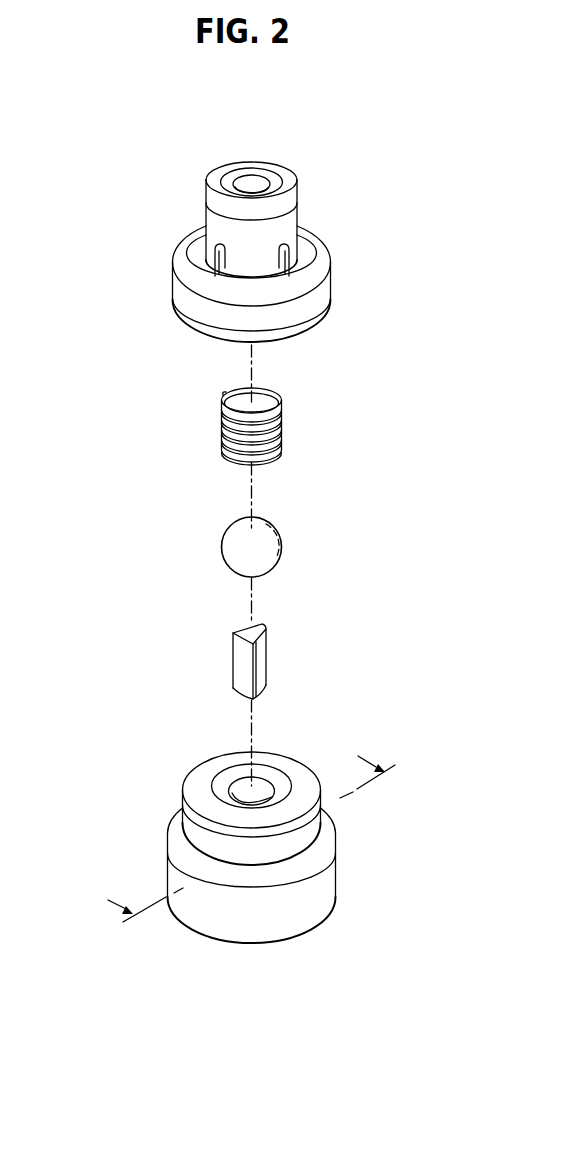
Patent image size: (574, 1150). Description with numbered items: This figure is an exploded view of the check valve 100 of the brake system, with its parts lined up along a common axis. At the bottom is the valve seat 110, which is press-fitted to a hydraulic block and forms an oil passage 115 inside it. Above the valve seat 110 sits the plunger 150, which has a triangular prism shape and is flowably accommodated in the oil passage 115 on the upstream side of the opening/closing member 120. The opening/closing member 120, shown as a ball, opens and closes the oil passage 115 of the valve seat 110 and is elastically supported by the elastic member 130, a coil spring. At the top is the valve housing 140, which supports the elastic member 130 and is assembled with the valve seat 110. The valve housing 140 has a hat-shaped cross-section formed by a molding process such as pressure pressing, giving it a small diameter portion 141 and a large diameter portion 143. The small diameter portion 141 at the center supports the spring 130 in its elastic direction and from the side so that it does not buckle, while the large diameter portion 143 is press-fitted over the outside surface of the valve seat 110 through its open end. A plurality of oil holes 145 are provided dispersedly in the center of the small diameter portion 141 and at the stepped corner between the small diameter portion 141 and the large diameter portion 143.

The check valve 100 is at (142, 130).
The valve seat 110 is at (336, 873).
The oil passage 115 is at (229, 791).
The opening/closing member 120 is at (281, 543).
The elastic member 130 is at (282, 419).
The valve housing 140 is at (316, 197).
The small diameter portion 141 is at (213, 216).
The large diameter portion 143 is at (183, 262).
The oil holes 145 is at (252, 177).
The plunger 150 is at (266, 655).